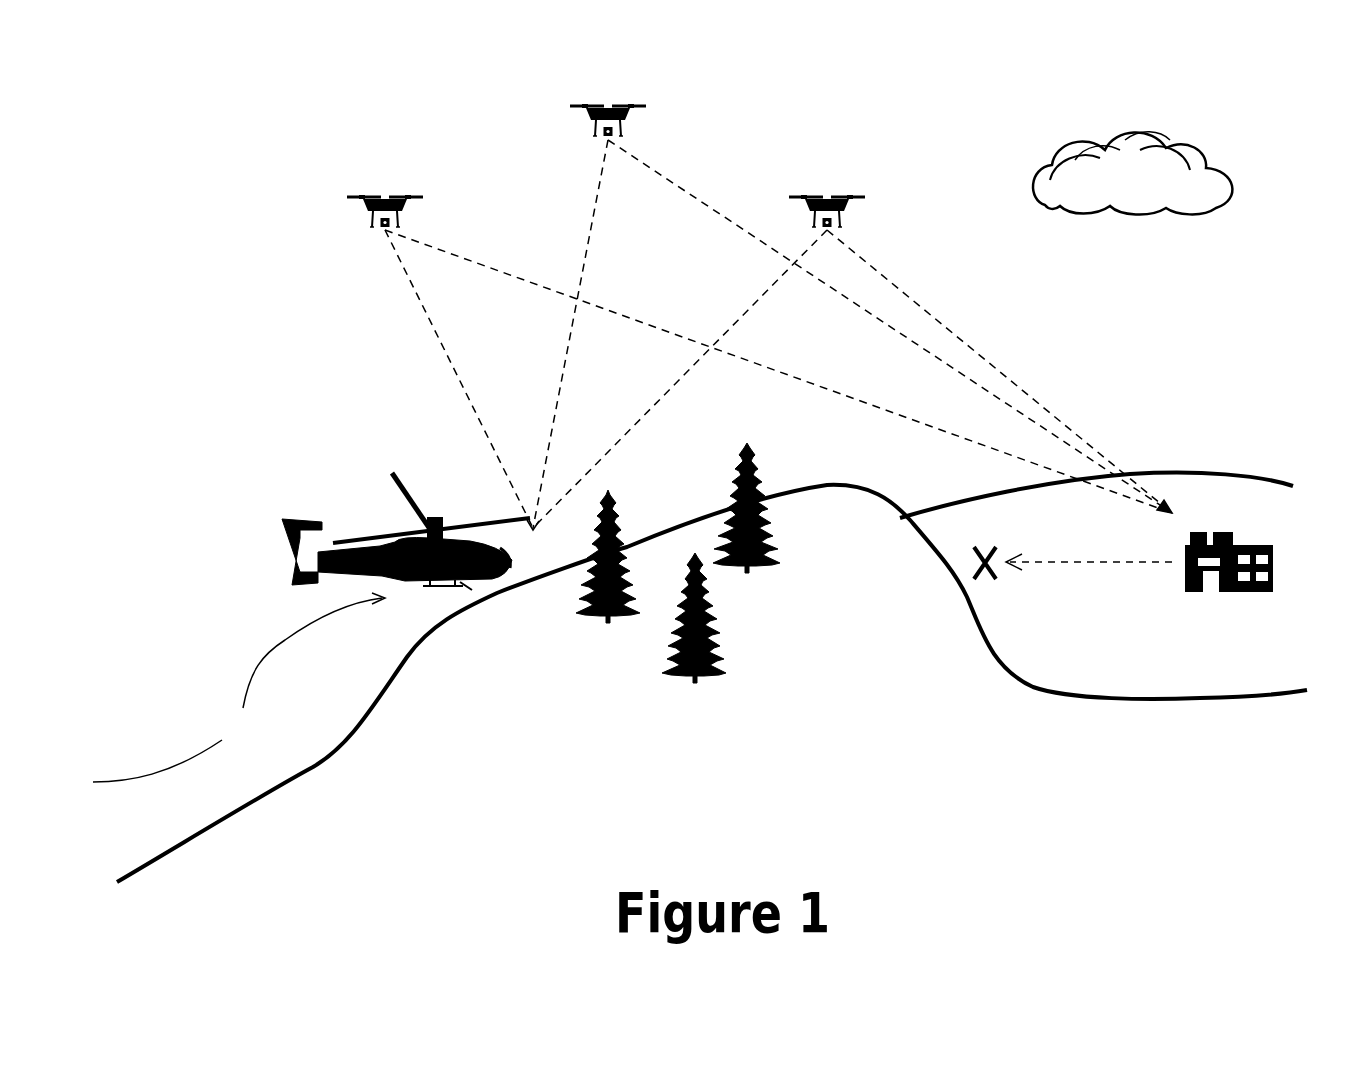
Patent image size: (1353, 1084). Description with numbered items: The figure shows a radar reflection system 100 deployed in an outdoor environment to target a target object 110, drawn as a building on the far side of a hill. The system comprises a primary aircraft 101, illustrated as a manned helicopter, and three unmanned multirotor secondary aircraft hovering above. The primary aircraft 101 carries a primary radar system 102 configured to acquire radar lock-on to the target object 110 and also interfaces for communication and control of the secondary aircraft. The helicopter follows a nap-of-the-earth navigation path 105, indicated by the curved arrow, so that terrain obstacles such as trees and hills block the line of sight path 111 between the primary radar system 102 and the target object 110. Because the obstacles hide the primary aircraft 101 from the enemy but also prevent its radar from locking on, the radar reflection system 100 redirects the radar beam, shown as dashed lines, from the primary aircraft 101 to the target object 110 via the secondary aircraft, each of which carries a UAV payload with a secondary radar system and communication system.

The radar reflection system 100 is at (287, 117).
The primary aircraft 101 is at (340, 517).
The primary radar system 102 is at (507, 555).
The nap-of-the-earth navigation path 105 is at (246, 688).
The target object 110 is at (1229, 575).
The line of sight path 111 is at (1077, 563).